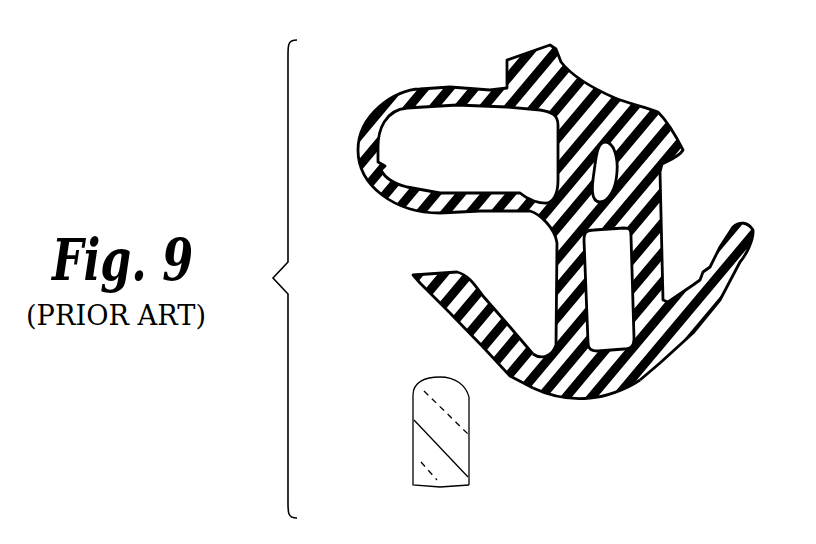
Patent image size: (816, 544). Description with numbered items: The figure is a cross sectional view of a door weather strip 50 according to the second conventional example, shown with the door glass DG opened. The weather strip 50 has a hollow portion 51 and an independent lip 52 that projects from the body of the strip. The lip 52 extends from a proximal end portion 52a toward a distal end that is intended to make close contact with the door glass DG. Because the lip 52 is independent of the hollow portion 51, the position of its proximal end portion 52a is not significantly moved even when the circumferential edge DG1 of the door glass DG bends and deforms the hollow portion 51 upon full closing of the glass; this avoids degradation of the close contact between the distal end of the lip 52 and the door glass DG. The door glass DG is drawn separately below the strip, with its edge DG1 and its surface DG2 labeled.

The weather strip 50 is at (615, 78).
The hollow portion 51 is at (477, 164).
The lip 52 is at (485, 290).
The proximal end portion of lip 52a is at (583, 401).
The door glass DG is at (432, 483).
The circumferential edge of door glass DG1 is at (437, 380).
The surface of door glass DG2 is at (470, 457).